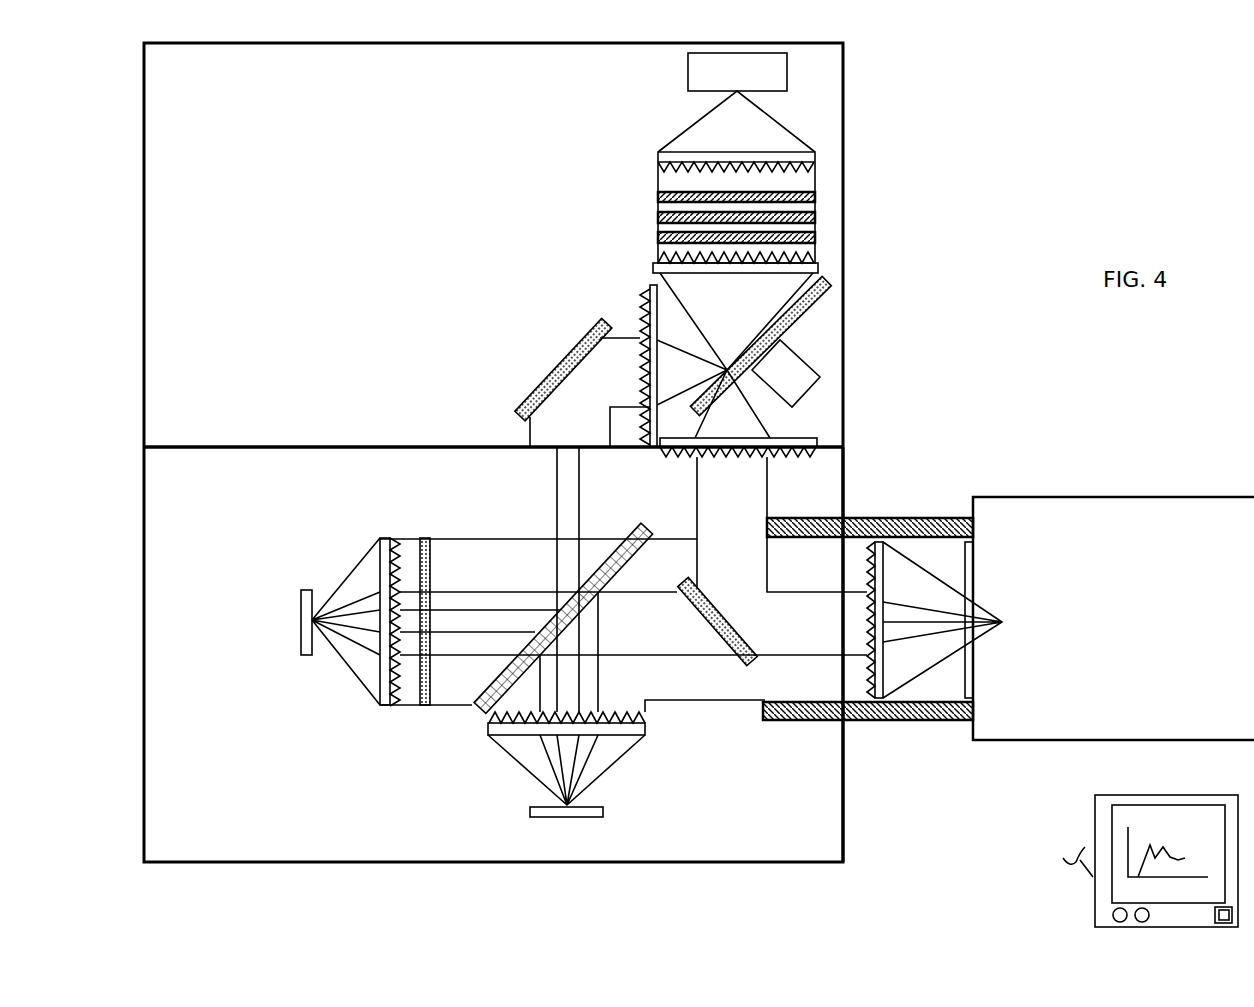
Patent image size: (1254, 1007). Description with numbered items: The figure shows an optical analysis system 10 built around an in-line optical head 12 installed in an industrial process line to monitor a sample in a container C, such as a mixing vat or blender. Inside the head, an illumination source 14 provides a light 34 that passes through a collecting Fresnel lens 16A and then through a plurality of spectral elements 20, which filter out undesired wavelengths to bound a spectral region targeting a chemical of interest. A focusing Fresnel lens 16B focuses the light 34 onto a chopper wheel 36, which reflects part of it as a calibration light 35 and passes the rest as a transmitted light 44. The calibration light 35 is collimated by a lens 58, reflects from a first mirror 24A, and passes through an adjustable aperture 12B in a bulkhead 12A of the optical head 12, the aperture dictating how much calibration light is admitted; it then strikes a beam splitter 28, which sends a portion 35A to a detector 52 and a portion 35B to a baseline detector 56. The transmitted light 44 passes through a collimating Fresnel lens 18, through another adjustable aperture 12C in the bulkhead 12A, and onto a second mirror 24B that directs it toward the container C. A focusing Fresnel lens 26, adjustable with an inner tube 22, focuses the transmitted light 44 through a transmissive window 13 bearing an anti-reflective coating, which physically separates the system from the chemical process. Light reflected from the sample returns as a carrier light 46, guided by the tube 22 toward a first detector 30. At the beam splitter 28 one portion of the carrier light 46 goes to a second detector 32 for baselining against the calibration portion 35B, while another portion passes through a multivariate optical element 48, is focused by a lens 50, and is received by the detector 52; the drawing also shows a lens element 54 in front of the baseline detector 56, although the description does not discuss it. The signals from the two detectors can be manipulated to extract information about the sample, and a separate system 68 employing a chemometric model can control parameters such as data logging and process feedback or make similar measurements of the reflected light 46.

The optical analysis system 10 is at (1088, 145).
The optical head 12 is at (812, 864).
The bulkhead 12A is at (306, 446).
The adjustable aperture 12B is at (553, 450).
The adjustable aperture 12C is at (818, 452).
The transmissive window 13 is at (973, 667).
The illumination source 14 is at (787, 62).
The collecting Fresnel lens 16A is at (658, 157).
The focusing Fresnel lens 16B is at (657, 268).
The collimating Fresnel lens 18 is at (800, 435).
The spectral elements 20 is at (828, 243).
The inner tube 22 is at (950, 720).
The first mirror 24A is at (554, 365).
The second mirror 24B is at (718, 615).
The focusing Fresnel lens 26 is at (880, 697).
The beam splitter 28 is at (609, 562).
The first detector 30 is at (336, 543).
The second detector 32 is at (670, 808).
The light 34 is at (783, 128).
The calibration light 35 is at (560, 430).
The portion of calibration light 35A is at (522, 618).
The portion of calibration light 35B is at (573, 680).
The chopper wheel 36 is at (813, 308).
The transmitted light 44 is at (791, 624).
The carrier light 46 is at (930, 593).
The multivariate optical element 48 is at (425, 705).
The lens 50 is at (382, 705).
The detector 52 is at (303, 657).
The detector lens 54 is at (647, 735).
The baseline detector 56 is at (587, 818).
The lens 58 is at (648, 286).
The system 68 is at (1173, 795).
The container C is at (1160, 497).